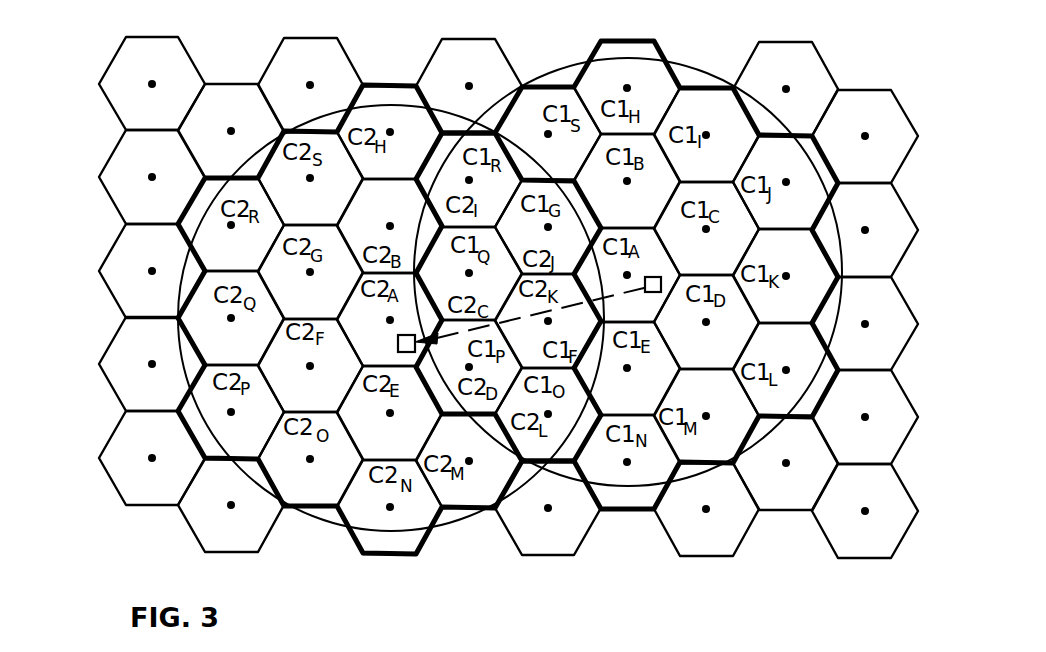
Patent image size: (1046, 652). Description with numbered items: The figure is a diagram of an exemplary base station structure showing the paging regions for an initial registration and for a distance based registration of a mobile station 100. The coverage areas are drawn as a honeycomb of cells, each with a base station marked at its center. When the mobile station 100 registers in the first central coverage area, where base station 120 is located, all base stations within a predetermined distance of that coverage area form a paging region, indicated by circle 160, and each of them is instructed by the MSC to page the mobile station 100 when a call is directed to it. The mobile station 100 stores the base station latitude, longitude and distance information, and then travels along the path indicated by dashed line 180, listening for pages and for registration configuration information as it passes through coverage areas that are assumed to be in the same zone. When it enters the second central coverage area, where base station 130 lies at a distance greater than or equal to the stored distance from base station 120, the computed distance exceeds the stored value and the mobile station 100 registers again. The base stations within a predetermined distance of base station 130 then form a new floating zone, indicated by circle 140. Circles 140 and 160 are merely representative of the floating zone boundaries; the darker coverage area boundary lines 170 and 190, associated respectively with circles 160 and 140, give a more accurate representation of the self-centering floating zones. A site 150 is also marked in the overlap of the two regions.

The mobile station 100 is at (398, 345).
The base station of coverage area C1A 120 is at (631, 272).
The base station of coverage area C2A 130 is at (388, 319).
The circle 140 is at (445, 528).
The base station site of overlapping cell 150 is at (550, 322).
The circle 160 is at (534, 80).
The darker coverage area boundary line 170 is at (610, 510).
The dashed line 180 is at (502, 320).
The darker coverage area boundary line 190 is at (330, 506).